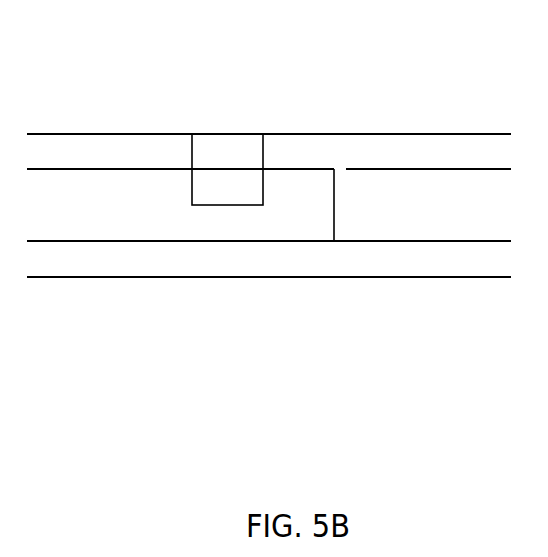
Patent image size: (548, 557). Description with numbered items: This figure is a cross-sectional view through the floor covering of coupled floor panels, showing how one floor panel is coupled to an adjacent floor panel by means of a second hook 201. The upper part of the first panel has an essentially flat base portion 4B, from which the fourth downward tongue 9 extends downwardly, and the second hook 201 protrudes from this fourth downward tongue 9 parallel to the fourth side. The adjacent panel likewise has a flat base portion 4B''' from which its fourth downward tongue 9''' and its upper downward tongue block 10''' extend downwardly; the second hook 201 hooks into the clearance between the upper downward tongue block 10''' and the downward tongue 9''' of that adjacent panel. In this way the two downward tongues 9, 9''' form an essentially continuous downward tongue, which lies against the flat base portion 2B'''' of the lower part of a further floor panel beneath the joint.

The flat base portion 4B is at (269, 81).
The flat base portion 4B''' is at (269, 90).
The upper downward tongue block 10''' is at (232, 108).
The second hook 201 is at (292, 197).
The fourth downward tongue 9 is at (269, 288).
The fourth downward tongue 9''' is at (422, 289).
The flat base portion 2B'''' is at (269, 327).